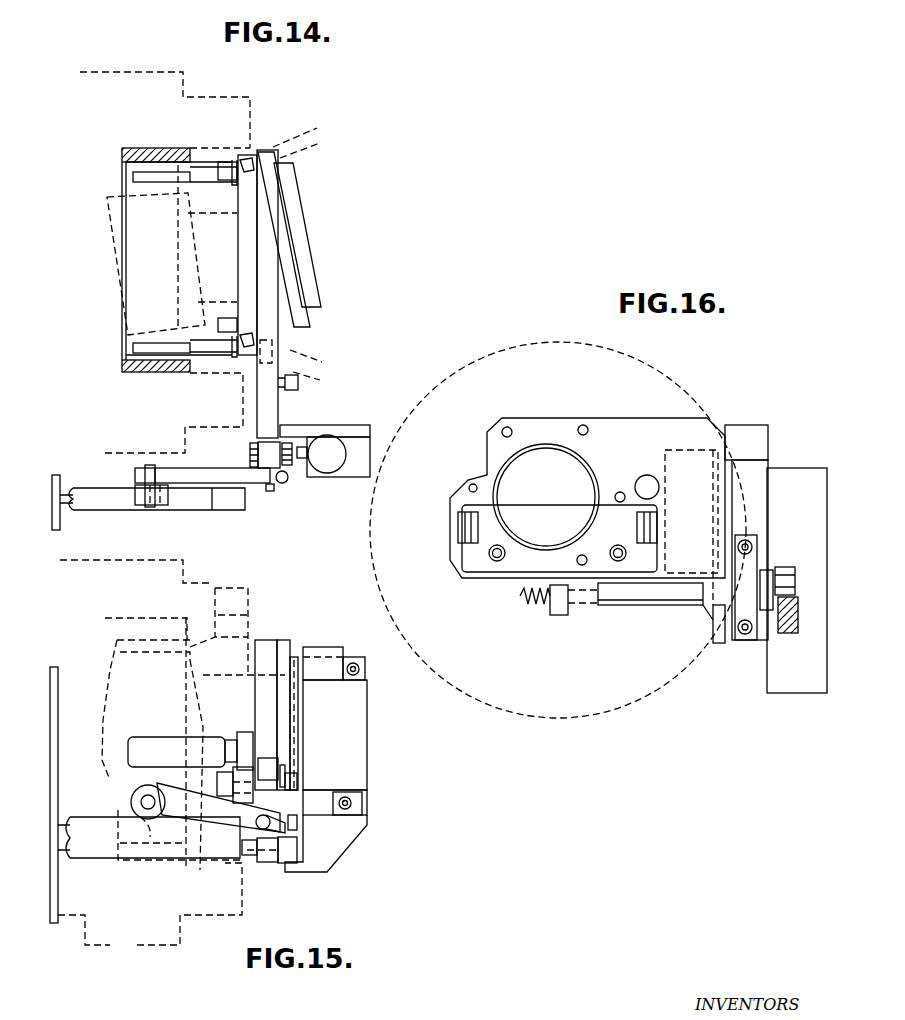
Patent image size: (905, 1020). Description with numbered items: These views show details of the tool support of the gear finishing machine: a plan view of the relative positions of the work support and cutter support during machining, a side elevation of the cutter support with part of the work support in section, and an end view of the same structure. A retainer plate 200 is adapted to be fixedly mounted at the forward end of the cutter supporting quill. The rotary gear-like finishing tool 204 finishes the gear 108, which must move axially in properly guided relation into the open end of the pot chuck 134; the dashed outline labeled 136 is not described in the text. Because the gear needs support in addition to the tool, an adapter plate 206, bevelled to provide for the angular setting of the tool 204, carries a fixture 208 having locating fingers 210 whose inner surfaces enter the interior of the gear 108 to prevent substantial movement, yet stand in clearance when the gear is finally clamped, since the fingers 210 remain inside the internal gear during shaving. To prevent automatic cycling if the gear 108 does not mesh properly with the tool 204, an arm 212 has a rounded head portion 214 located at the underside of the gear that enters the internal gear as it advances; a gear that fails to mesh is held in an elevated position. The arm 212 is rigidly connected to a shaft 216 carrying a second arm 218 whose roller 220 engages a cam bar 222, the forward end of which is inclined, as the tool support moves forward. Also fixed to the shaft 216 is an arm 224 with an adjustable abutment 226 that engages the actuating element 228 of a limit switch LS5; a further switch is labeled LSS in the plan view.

In FIG. 14, the gear 108 is at (122, 150).
In FIG. 15, the gear 108 is at (117, 641).
In FIG. 14, the pot chuck 134 is at (185, 93).
In FIG. 15, the pot chuck 134 is at (183, 563).
In FIG. 15, the bracket 136 is at (218, 617).
In FIG. 14, the retainer plate 200 is at (305, 178).
In FIG. 14, the rotary gear-like finishing tool 204 is at (110, 215).
In FIG. 15, the rotary gear-like finishing tool 204 is at (100, 713).
In FIG. 14, the adapter plate 206 is at (282, 305).
In FIG. 16, the adapter plate 206 is at (560, 404).
In FIG. 14, the fixture 208 is at (253, 237).
In FIG. 16, the fixture 208 is at (607, 490).
In FIG. 14, the locating fingers 210 is at (147, 337).
In FIG. 15, the locating fingers 210 is at (155, 737).
In FIG. 16, the locating fingers 210 is at (460, 528).
In FIG. 15, the arm 212 is at (197, 868).
In FIG. 16, the arm 212 is at (550, 612).
In FIG. 15, the rounded head portion 214 is at (132, 868).
In FIG. 14, the shaft 216 is at (272, 486).
In FIG. 15, the shaft 216 is at (290, 830).
In FIG. 16, the shaft 216 is at (620, 605).
In FIG. 14, the second arm 218 is at (206, 472).
In FIG. 15, the second arm 218 is at (180, 793).
In FIG. 16, the second arm 218 is at (773, 567).
In FIG. 14, the roller 220 is at (132, 497).
In FIG. 15, the roller 220 is at (131, 800).
In FIG. 16, the roller 220 is at (792, 564).
In FIG. 14, the cam bar 222 is at (188, 510).
In FIG. 15, the cam bar 222 is at (222, 867).
In FIG. 16, the cam bar 222 is at (795, 633).
In FIG. 14, the arm 224 is at (270, 445).
In FIG. 15, the arm 224 is at (278, 797).
In FIG. 16, the arm 224 is at (750, 537).
In FIG. 15, the adjustable abutment 226 is at (288, 767).
In FIG. 14, the actuating element 228 is at (300, 460).
In FIG. 15, the actuating element 228 is at (297, 770).
In FIG. 14, the limit switch LSS is at (355, 470).
In FIG. 15, the limit switch LS5 is at (363, 763).